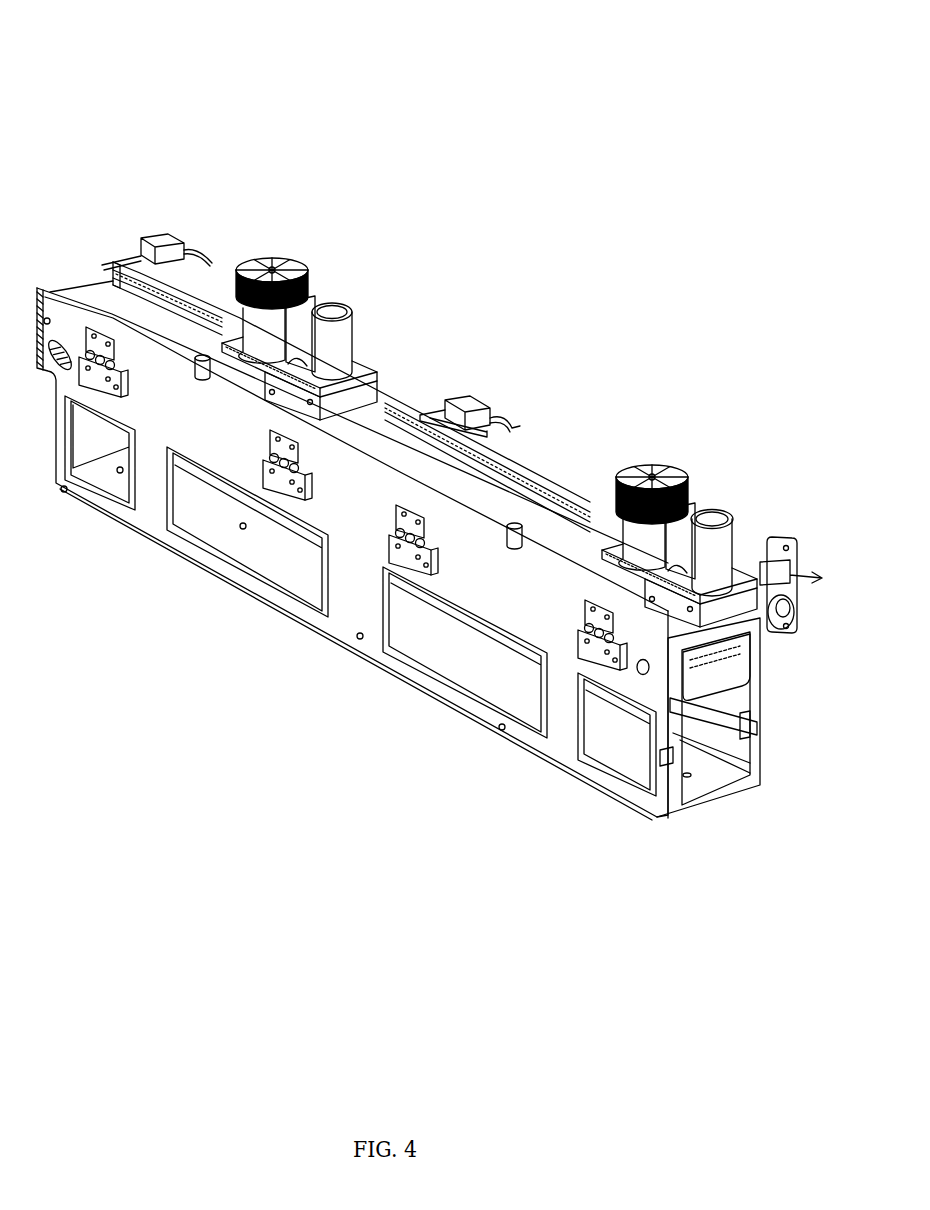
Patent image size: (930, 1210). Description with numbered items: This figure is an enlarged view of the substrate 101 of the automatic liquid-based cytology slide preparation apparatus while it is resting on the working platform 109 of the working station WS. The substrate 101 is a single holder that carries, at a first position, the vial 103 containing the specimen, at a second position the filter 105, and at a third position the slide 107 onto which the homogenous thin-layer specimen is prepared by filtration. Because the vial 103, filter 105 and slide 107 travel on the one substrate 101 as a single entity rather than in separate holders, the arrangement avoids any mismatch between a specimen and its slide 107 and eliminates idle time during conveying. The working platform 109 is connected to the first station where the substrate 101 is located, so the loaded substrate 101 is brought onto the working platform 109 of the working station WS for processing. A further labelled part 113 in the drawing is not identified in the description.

The working station WS is at (700, 84).
The substrate 101 is at (368, 381).
The vial 103 is at (257, 335).
The filter 105 is at (353, 340).
The slide 107 is at (297, 371).
The working platform 109 is at (483, 485).
The knob 113 is at (313, 268).